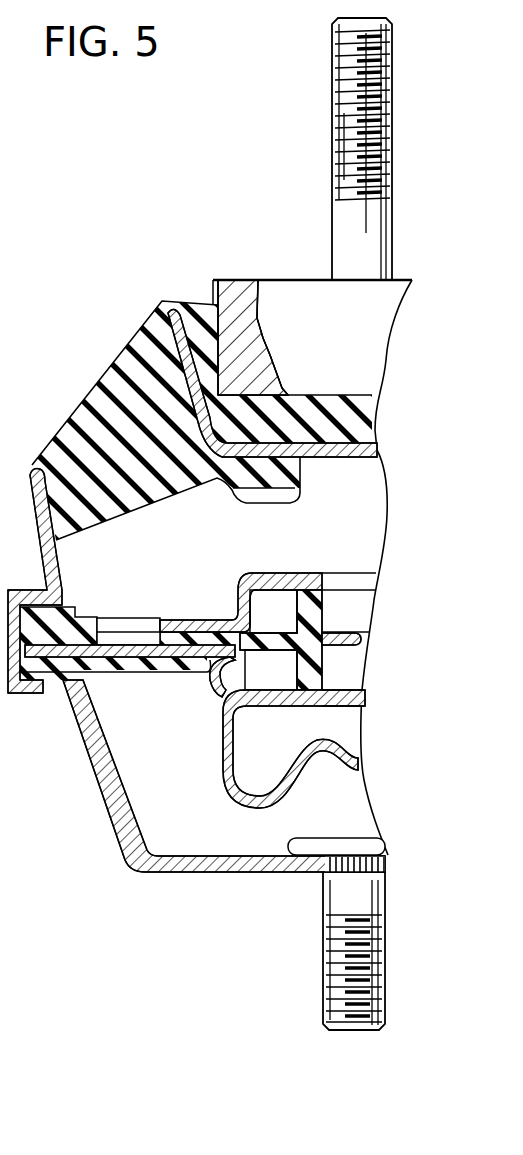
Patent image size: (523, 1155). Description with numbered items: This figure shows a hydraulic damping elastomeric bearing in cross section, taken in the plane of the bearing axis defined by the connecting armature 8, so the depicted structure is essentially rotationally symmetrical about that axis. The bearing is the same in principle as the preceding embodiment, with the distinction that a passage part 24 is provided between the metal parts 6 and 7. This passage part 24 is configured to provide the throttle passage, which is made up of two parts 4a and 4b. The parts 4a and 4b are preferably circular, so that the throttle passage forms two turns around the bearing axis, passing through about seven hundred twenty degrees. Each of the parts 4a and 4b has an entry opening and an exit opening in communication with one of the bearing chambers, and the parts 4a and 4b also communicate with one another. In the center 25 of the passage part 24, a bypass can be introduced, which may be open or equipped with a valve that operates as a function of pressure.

The connecting armature 8 is at (392, 148).
The metal part 6 is at (290, 578).
The throttle passage part 4a is at (262, 613).
The throttle passage part 4b is at (262, 667).
The passage part 24 is at (343, 608).
The center of the passage part 25 is at (350, 633).
The metal part 7 is at (295, 708).